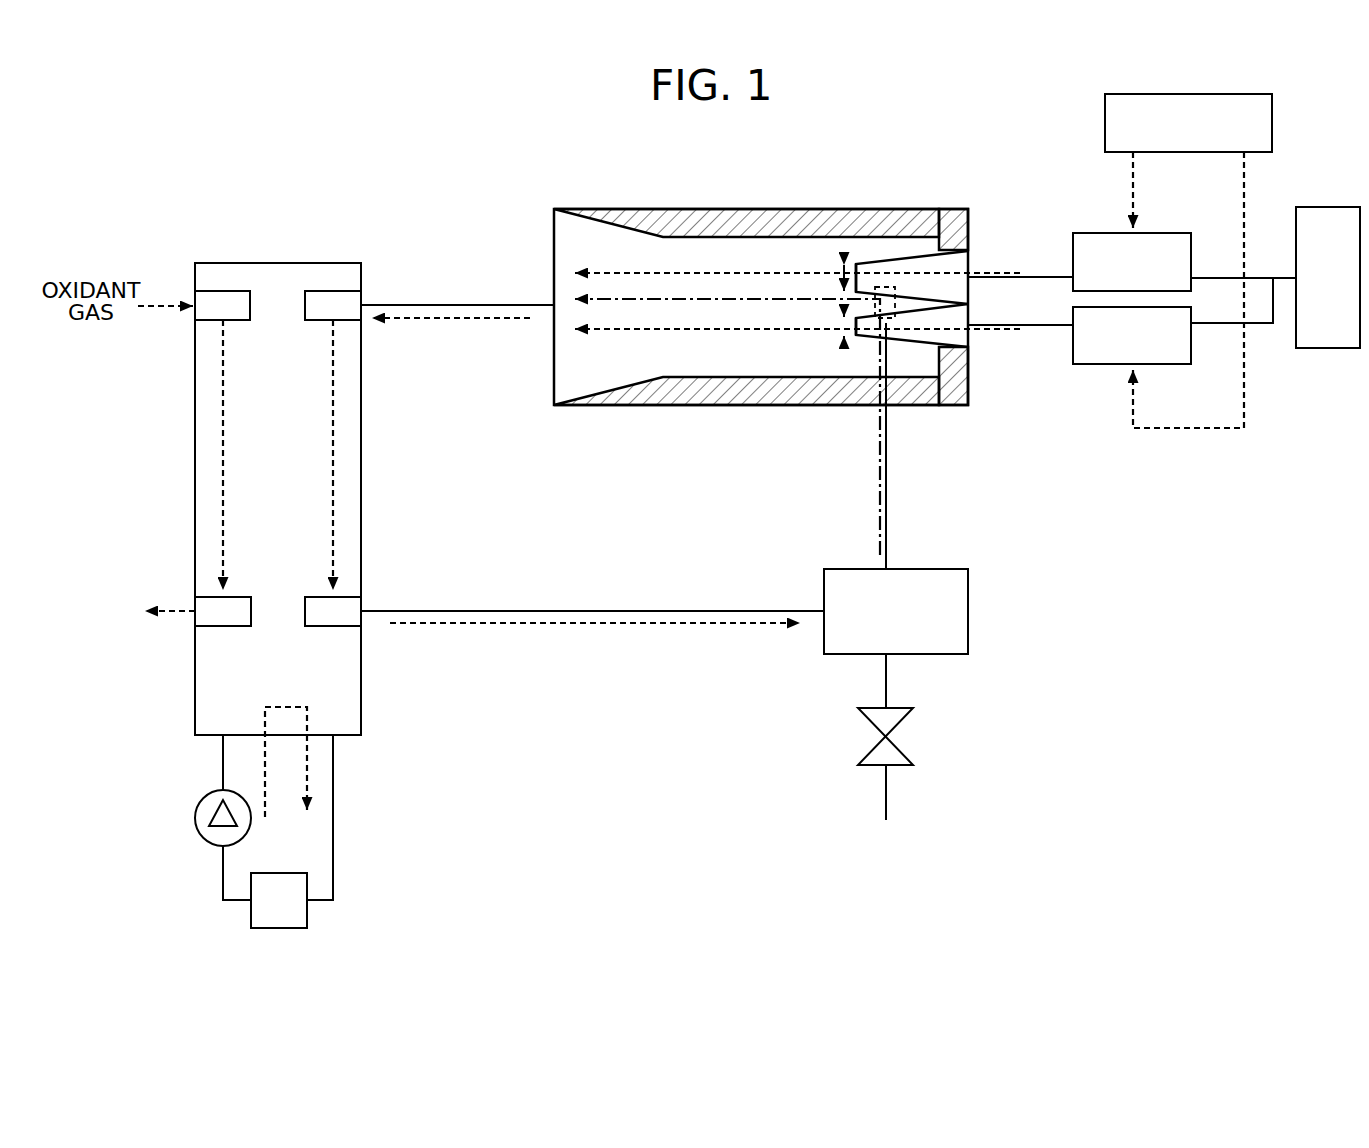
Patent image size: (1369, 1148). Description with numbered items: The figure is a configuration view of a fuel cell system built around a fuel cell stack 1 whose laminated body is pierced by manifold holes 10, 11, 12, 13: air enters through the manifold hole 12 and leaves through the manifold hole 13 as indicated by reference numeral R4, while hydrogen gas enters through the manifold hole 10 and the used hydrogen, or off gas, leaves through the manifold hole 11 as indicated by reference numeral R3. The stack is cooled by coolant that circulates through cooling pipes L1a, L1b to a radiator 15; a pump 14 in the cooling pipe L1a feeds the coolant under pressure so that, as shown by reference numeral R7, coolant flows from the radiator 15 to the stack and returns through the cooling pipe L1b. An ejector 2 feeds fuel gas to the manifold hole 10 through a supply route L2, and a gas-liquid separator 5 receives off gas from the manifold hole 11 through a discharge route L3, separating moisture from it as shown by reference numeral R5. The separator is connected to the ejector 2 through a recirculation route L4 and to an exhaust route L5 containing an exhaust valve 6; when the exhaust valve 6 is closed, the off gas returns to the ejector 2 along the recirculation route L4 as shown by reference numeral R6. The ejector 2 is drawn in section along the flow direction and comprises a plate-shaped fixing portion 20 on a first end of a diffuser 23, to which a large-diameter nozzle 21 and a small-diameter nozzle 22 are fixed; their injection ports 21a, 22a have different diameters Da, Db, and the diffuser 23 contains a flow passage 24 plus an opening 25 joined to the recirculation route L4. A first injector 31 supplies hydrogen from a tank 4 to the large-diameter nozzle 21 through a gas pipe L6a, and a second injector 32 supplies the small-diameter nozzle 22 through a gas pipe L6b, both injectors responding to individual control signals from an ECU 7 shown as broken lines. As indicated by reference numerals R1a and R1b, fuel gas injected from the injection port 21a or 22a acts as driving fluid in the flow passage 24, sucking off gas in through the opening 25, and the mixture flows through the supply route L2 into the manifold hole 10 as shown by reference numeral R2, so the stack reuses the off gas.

The fuel cell stack 1 is at (335, 263).
The ejector 2 is at (814, 344).
The tank 4 is at (1333, 207).
The gas-liquid separator 5 is at (918, 569).
The exhaust valve 6 is at (905, 708).
The ECU 7 is at (1272, 104).
The manifold hole 10 is at (338, 291).
The manifold hole 11 is at (335, 627).
The manifold hole 12 is at (218, 291).
The manifold hole 13 is at (225, 627).
The pump 14 is at (202, 800).
The radiator 15 is at (290, 873).
The fixing portion 20 is at (958, 212).
The large-diameter nozzle 21 is at (968, 266).
The injection port 21a is at (858, 264).
The small-diameter nozzle 22 is at (968, 322).
The injection port 22a is at (860, 335).
The diffuser 23 is at (788, 209).
The flow passage 24 is at (750, 365).
The opening 25 is at (893, 285).
The first injector 31 is at (1160, 233).
The second injector 32 is at (1191, 316).
The cooling pipe L1a is at (223, 870).
The cooling pipe L1b is at (333, 870).
The supply route L2 is at (495, 305).
The discharge route L3 is at (603, 611).
The recirculation route L4 is at (886, 558).
The exhaust route L5 is at (886, 812).
The gas pipe L6a is at (1040, 277).
The gas pipe L6b is at (1040, 325).
The fuel gas injection from large-diameter nozzle R1a is at (805, 262).
The fuel gas injection from small-diameter nozzle R1b is at (806, 344).
The mixed gas flow to manifold hole R2 is at (451, 331).
The hydrogen gas flow through stack R3 is at (333, 453).
The air flow through stack R4 is at (223, 453).
The off gas flow into separator R5 is at (595, 639).
The off gas recirculation flow R6 is at (727, 427).
The coolant flow R7 is at (307, 722).
The diameter Da is at (814, 262).
The diameter Db is at (814, 322).